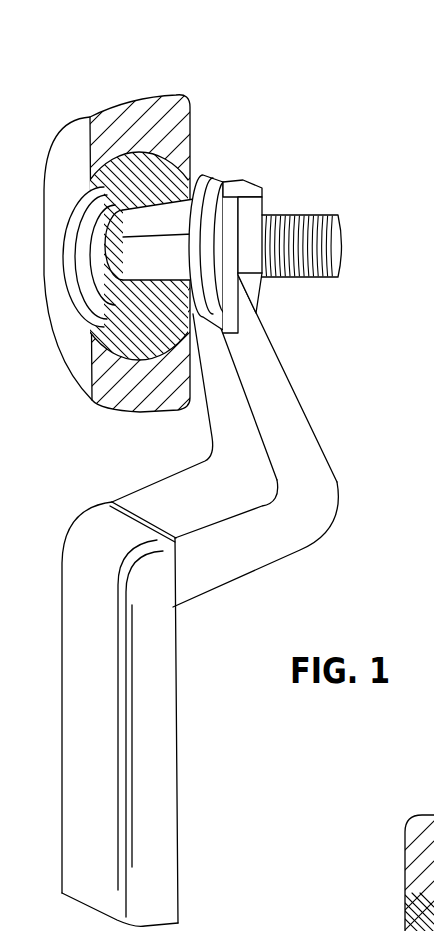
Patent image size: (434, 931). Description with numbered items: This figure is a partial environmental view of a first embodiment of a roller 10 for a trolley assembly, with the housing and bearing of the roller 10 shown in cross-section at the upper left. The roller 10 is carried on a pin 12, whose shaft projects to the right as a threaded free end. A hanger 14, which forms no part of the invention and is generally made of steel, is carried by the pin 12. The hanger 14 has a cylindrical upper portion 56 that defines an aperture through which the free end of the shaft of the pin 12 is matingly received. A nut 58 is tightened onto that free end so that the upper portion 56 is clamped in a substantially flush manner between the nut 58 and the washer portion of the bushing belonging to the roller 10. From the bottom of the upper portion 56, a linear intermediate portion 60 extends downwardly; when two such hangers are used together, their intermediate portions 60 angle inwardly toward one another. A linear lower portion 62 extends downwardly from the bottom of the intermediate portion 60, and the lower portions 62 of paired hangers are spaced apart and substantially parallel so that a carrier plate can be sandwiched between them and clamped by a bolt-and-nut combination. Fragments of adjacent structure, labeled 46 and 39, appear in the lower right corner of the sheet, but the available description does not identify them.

The roller 10 is at (120, 86).
The pin 12 is at (332, 199).
The hanger 14 is at (248, 600).
The vehicle member 39 is at (384, 912).
The mounting block 46 is at (405, 900).
The cylindrical upper portion 56 is at (297, 396).
The nut 58 is at (245, 182).
The linear intermediate portion 60 is at (240, 547).
The linear lower portion 62 is at (162, 757).